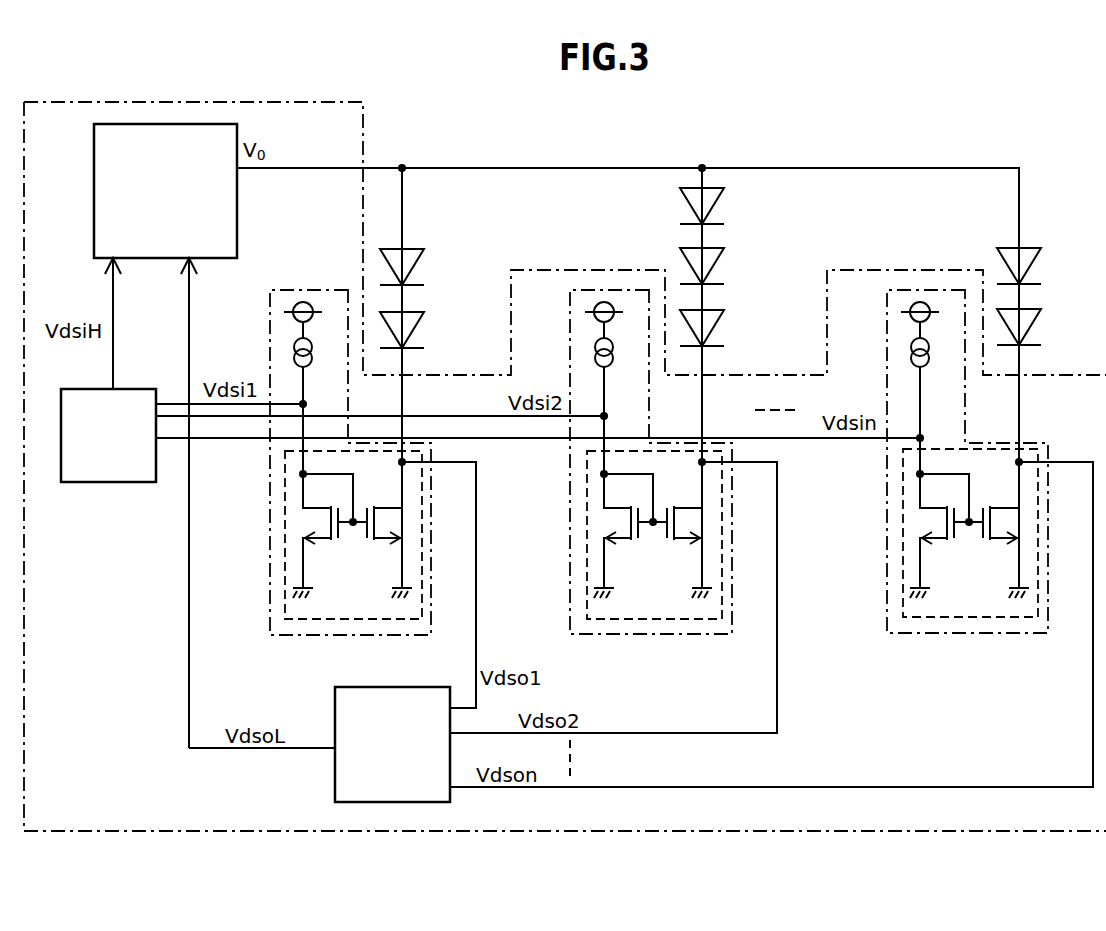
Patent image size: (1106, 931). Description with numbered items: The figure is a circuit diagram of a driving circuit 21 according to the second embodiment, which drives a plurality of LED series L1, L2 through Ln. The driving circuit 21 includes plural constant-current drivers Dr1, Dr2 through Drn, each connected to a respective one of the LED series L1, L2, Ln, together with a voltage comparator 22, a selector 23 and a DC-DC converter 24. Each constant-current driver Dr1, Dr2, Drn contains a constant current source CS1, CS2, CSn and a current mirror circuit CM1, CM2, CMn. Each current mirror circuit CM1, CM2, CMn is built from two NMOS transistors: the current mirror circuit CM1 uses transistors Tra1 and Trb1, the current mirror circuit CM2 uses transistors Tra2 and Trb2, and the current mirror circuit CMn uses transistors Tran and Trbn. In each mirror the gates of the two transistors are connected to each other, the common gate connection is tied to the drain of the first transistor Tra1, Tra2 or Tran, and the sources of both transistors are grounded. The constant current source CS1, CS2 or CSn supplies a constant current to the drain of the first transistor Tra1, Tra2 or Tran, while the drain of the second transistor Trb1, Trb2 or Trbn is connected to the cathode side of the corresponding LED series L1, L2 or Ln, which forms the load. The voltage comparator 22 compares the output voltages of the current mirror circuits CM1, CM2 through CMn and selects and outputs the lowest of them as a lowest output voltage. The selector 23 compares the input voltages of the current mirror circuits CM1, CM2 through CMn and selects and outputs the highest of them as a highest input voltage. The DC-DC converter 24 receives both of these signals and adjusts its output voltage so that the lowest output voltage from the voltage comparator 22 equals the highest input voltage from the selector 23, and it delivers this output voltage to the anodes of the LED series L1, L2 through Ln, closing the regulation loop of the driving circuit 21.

The driving circuit 21 is at (948, 857).
The voltage comparator 22 is at (335, 783).
The selector 23 is at (105, 482).
The DC-DC converter 24 is at (95, 205).
The LED series L1 is at (437, 243).
The LED series L2 is at (735, 185).
The LED series Ln is at (1050, 240).
The constant current source CS1 is at (295, 350).
The constant current source CS2 is at (596, 350).
The constant current source CSn is at (912, 350).
The current mirror circuit CM1 is at (286, 493).
The current mirror circuit CM2 is at (587, 493).
The current mirror circuit CMn is at (903, 493).
The constant-current driver Dr1 is at (270, 575).
The constant-current driver Dr2 is at (570, 575).
The constant-current driver Drn is at (887, 575).
The NMOS transistor Tra1 is at (330, 534).
The NMOS transistor Trb1 is at (385, 528).
The NMOS transistor Tra2 is at (630, 534).
The NMOS transistor Trb2 is at (685, 528).
The NMOS transistor Tran is at (946, 534).
The NMOS transistor Trbn is at (1001, 528).